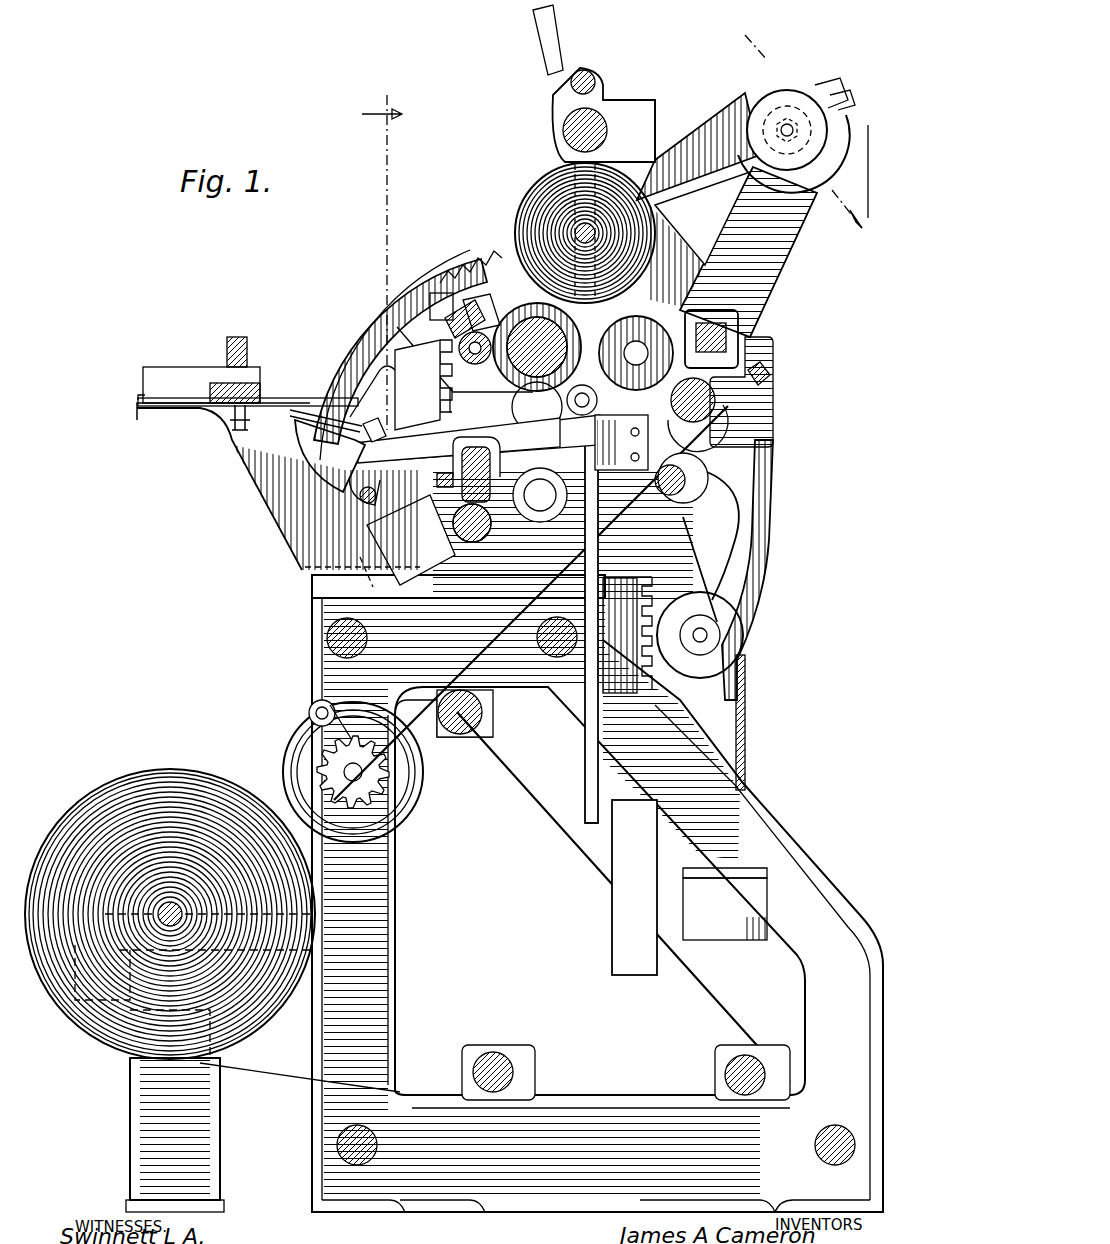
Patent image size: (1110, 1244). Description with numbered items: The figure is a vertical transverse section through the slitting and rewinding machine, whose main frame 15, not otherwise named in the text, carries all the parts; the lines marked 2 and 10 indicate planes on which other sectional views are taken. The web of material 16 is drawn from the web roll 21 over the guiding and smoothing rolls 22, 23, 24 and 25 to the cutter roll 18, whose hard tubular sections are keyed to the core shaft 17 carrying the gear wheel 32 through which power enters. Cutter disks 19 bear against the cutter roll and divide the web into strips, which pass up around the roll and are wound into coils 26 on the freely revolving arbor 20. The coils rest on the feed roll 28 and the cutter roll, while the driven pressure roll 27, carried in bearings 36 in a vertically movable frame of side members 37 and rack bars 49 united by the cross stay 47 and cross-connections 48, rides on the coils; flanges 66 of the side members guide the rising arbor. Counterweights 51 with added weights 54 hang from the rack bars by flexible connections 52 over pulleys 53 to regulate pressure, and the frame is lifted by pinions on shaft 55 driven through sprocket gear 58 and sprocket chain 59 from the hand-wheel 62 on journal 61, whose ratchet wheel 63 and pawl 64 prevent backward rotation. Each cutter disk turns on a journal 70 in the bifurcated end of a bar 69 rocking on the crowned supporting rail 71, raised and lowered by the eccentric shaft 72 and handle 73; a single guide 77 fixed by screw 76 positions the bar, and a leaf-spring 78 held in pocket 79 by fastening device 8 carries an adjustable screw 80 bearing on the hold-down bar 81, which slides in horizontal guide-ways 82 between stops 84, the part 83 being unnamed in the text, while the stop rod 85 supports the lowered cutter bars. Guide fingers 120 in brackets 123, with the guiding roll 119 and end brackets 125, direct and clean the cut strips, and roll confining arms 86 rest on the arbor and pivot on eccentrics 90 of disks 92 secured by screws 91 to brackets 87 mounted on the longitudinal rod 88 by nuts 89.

The section line 2— 2 is at (381, 253).
The fastening device 8 is at (370, 424).
The section line 10— 10 is at (788, 137).
The frame 15 is at (852, 862).
The web of material 16 is at (648, 512).
The core shaft 17 is at (455, 300).
The cutter roll 18 is at (500, 285).
The cutter disks 19 is at (537, 415).
The arbor 20 is at (676, 208).
The web roll 21 is at (185, 778).
The guiding and smoothing roll 22 is at (500, 1058).
The guiding and smoothing roll 23 is at (725, 1066).
The guiding and smoothing roll 24 is at (472, 728).
The guiding and smoothing roll 25 is at (775, 420).
The coils 26 is at (522, 198).
The pressure roll 27 is at (562, 127).
The feed roll 28 is at (636, 353).
The gear wheel 32 is at (448, 292).
The bearings 36 is at (604, 95).
The side members 37 is at (585, 776).
The cross stay 47 is at (594, 76).
The cross-connections 48 is at (657, 104).
The rack bars 49 is at (612, 958).
The counterweights 51 is at (725, 909).
The flexible connection 52 is at (745, 742).
The pulleys 53 is at (745, 633).
The additional weights 54 is at (712, 880).
The shaft 55 is at (690, 506).
The sprocket gear 58 is at (687, 484).
The sprocket chain 59 is at (445, 752).
The journal 61 is at (300, 770).
The hand-wheel 62 is at (410, 808).
The ratchet wheel 63 is at (300, 766).
The pawl 64 is at (309, 712).
The flanges 66 is at (590, 820).
The disk-carrying bars 69 is at (415, 395).
The journals 70 is at (519, 442).
The supporting rail 71 is at (462, 458).
The eccentric shaft 72 is at (452, 522).
The handle 73 is at (300, 557).
The screw 76 is at (437, 481).
The single guide 77 is at (468, 435).
The leaf-spring 78 is at (305, 408).
The pocket 79 is at (325, 440).
The adjustable screw 80 is at (230, 435).
The hold-down bar 81 is at (248, 378).
The horizontal guide-ways 82 is at (150, 386).
The knob 83 is at (227, 342).
The stops 84 is at (138, 402).
The stop rod 85 is at (368, 487).
The roll confining arms 86 is at (738, 112).
The brackets 87 is at (748, 252).
The longitudinal rod 88 is at (740, 330).
The nuts 89 is at (772, 380).
The eccentrics 90 is at (790, 110).
The screws 91 is at (808, 134).
The disks 92 is at (826, 172).
The guiding roll 119 is at (440, 360).
The guide fingers 120 is at (445, 290).
The brackets 123 is at (395, 285).
The end brackets 125 is at (400, 330).